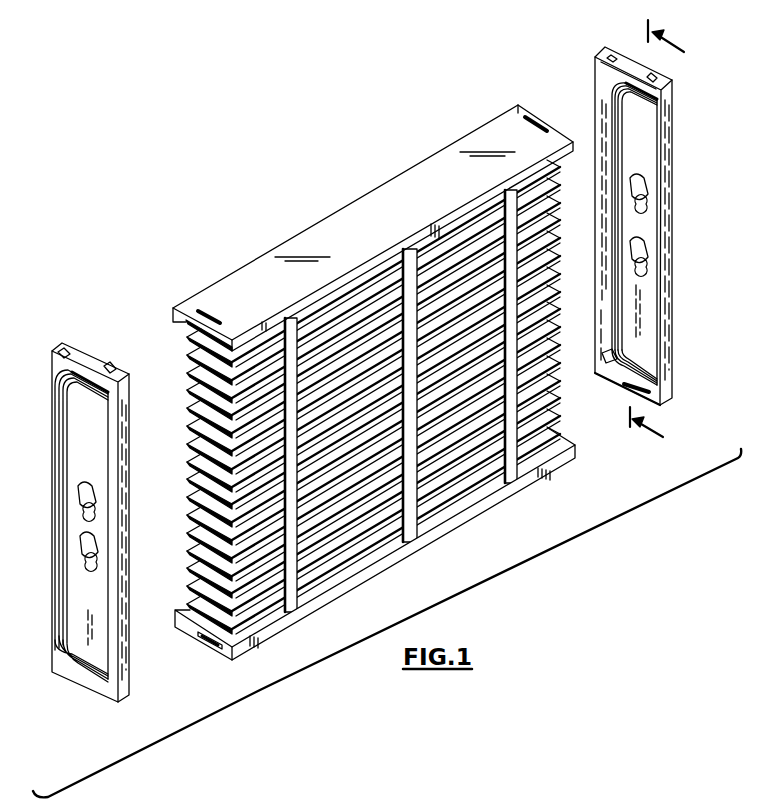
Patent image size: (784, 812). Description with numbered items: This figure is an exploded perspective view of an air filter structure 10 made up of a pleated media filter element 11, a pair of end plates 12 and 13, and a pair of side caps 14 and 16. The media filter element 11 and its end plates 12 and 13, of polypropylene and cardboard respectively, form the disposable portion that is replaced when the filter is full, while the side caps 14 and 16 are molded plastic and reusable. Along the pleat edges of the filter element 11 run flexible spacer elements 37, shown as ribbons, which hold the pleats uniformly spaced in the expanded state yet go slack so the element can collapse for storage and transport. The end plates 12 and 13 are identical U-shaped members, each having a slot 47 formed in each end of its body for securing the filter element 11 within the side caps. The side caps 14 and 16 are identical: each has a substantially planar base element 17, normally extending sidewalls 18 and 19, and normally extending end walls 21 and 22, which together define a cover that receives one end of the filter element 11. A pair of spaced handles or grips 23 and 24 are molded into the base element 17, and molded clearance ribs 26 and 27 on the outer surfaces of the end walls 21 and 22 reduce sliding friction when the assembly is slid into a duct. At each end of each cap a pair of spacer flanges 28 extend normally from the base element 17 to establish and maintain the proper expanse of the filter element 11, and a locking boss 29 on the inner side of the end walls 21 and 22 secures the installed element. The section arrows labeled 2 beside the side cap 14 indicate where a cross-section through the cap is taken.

The air filter structure 10 is at (466, 106).
The media filter element 11 is at (186, 452).
The end plate 12 is at (397, 229).
The end plate 13 is at (430, 540).
The side cap 14 is at (674, 153).
The side cap 16 is at (94, 698).
The base element 17 is at (651, 162).
The sidewall 18 is at (602, 120).
The sidewall 19 is at (665, 216).
The end wall 21 is at (630, 58).
The end wall 22 is at (660, 396).
The handle or grip 23 is at (78, 497).
The handle or grip 24 is at (80, 548).
The clearance rib 26 is at (75, 346).
The clearance rib 27 is at (110, 366).
The spacer flange 28 is at (600, 58).
The locking boss 29 is at (652, 378).
The flexible spacer element 37 is at (515, 443).
The slot 47 is at (208, 318).
The section line 2- 2 is at (662, 235).